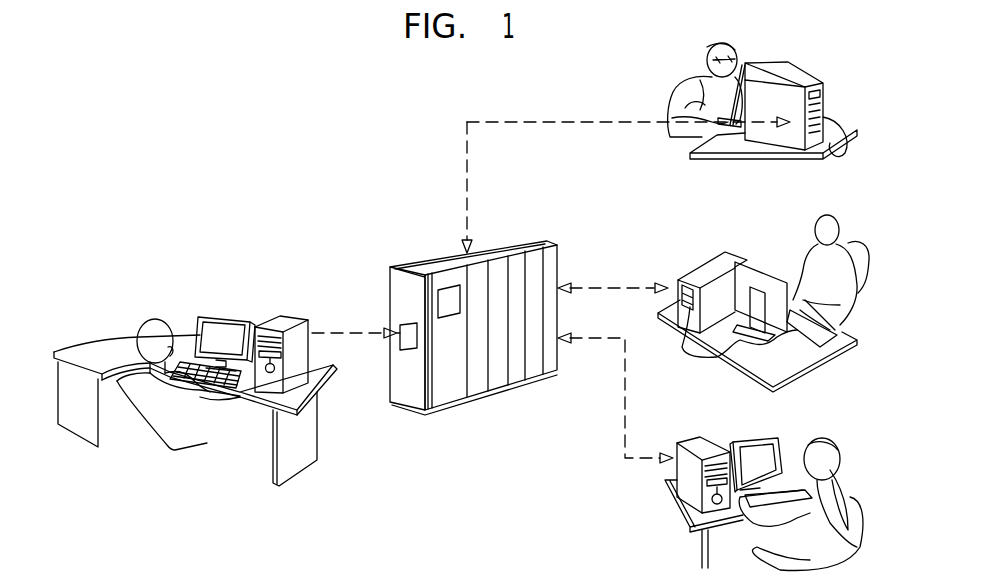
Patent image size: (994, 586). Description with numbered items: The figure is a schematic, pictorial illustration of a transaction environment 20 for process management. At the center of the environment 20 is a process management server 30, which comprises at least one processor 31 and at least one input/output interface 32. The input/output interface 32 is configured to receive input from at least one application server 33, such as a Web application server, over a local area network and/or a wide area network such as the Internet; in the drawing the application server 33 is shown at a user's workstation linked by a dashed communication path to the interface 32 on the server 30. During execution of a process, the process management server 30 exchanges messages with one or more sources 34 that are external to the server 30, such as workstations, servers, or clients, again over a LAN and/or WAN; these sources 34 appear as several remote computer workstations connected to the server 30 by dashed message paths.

The transaction environment 20 is at (303, 172).
The process management server 30 is at (437, 257).
The processor 31 is at (453, 318).
The input/output interface 32 is at (406, 324).
The application server 33 is at (281, 328).
The sources 34 is at (820, 92).